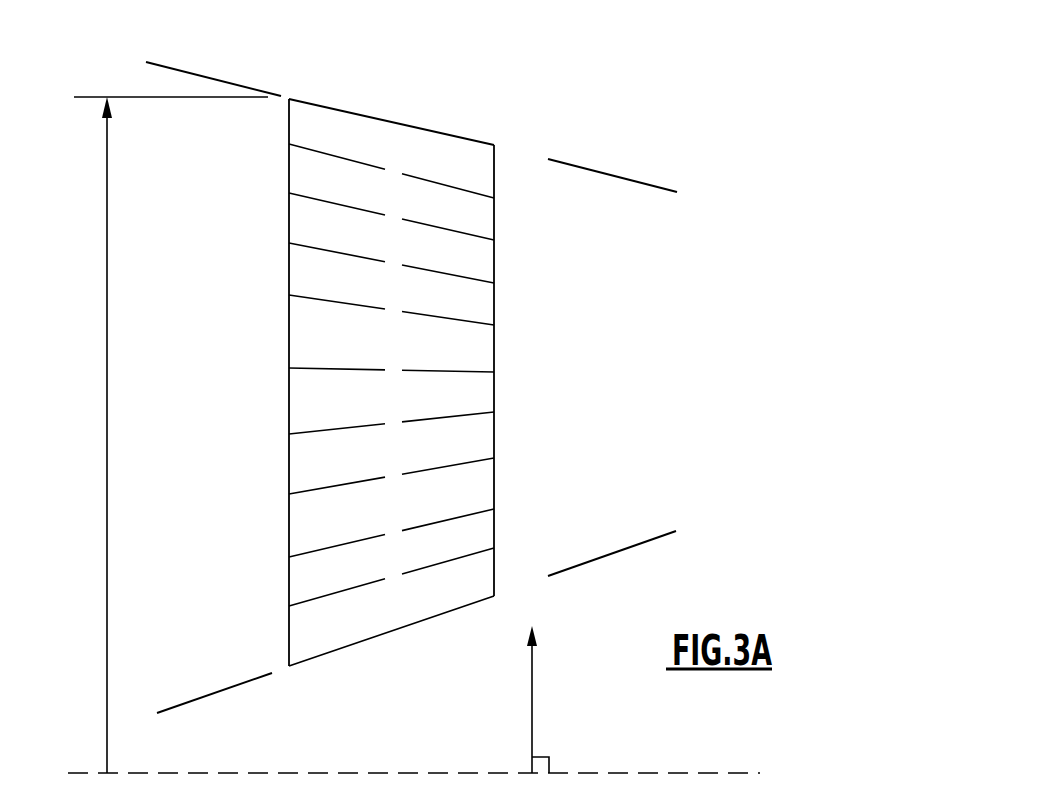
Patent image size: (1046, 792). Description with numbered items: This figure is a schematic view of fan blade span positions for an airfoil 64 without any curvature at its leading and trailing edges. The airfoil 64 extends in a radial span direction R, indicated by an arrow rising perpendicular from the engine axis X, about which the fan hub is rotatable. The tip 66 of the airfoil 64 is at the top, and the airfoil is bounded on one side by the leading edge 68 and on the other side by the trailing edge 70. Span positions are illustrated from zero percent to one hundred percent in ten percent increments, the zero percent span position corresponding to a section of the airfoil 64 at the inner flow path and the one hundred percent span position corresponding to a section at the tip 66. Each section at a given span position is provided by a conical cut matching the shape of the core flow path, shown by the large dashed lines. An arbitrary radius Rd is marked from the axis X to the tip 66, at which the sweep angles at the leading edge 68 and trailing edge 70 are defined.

The airfoil 64 is at (409, 360).
The tip 66 is at (375, 118).
The leading edge 68 is at (289, 317).
The trailing edge 70 is at (494, 357).
The arbitrary radius Rd is at (106, 394).
The radial span direction R is at (532, 707).
The axis X is at (330, 773).